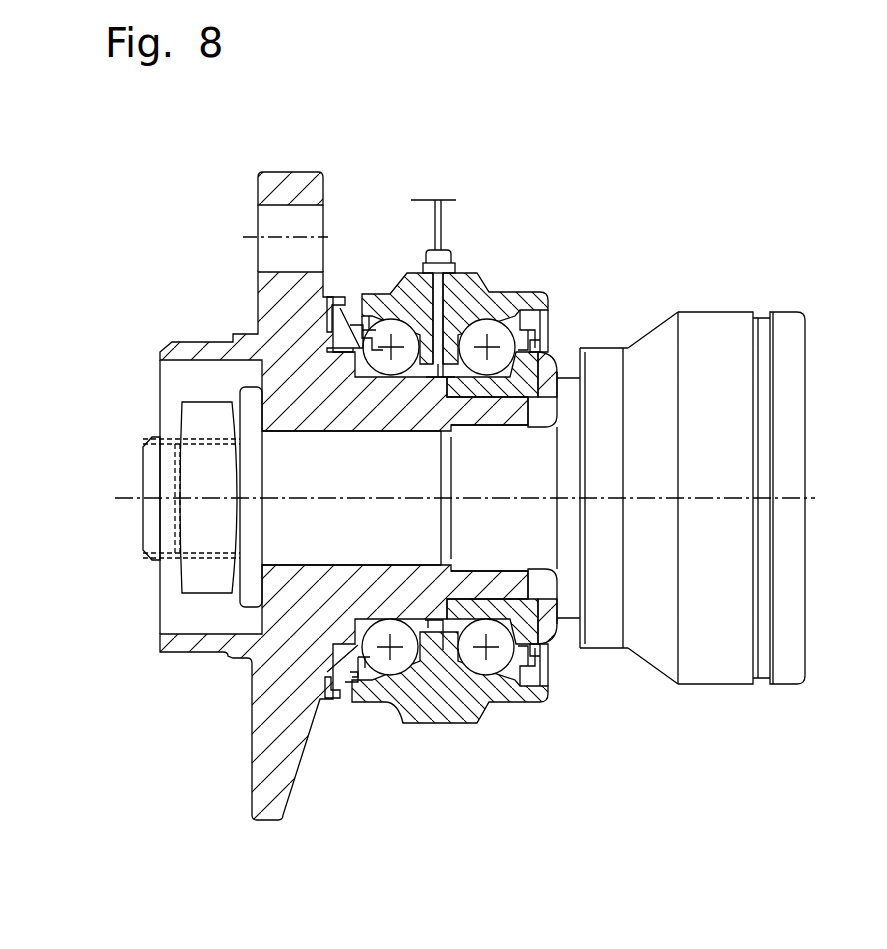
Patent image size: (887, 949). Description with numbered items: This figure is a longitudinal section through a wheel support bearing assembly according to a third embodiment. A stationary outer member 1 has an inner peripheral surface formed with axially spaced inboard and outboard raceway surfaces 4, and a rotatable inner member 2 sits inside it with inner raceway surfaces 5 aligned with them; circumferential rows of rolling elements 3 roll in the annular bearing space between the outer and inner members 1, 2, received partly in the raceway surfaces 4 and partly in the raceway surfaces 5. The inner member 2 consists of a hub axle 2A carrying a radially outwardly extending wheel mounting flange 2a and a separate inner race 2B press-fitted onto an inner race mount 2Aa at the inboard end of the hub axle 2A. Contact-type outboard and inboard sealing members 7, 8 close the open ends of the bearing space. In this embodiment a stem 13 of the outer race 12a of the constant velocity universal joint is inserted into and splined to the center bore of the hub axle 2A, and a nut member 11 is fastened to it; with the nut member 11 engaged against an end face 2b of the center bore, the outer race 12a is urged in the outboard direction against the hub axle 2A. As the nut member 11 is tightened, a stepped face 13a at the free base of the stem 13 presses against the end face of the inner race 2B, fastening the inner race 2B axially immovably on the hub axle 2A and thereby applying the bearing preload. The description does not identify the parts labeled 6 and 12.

The outer member 1 is at (422, 268).
The inner member 2 is at (44, 372).
The hub axle 2A is at (447, 379).
The inner race 2B is at (447, 394).
The wheel mounting flange 2a is at (297, 172).
The end face of the center bore 2b is at (237, 600).
The inner race mount 2Aa is at (553, 360).
The rolling elements 3 is at (376, 313).
The inboard and outboard raceway surfaces 4 is at (381, 337).
The inner inboard and outboard raceway surfaces 5 is at (310, 387).
The seal 6 is at (372, 325).
The outboard sealing member 7 is at (338, 297).
The inboard sealing member 8 is at (546, 330).
The nut member 11 is at (196, 578).
The outer joint member 12 is at (764, 283).
The outer race of the constant velocity universal joint 12a is at (708, 312).
The stem 13 is at (338, 538).
The stepped face 13a is at (557, 375).